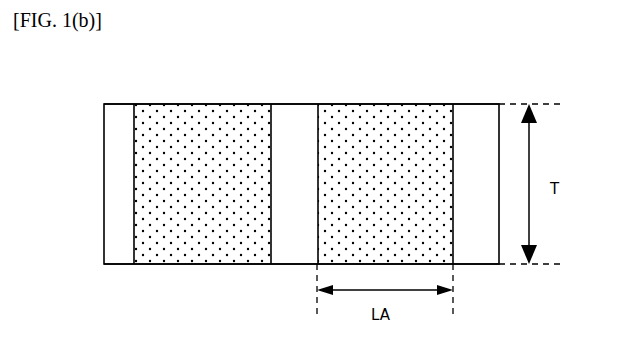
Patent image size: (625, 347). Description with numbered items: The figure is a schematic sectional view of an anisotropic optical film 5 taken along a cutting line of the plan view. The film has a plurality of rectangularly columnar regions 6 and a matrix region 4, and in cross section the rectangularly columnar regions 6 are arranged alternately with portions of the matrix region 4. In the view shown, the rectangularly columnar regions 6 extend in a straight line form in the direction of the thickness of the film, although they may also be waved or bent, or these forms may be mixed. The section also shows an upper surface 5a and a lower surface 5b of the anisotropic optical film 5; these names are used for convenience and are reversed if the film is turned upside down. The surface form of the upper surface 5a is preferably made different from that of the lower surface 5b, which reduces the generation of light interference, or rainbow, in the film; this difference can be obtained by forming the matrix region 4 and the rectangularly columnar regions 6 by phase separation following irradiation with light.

The matrix region 4 is at (118, 117).
The anisotropic optical film 5 is at (525, 72).
The upper surface 5a is at (178, 104).
The lower surface 5b is at (210, 265).
The rectangularly columnar regions 6 is at (236, 135).